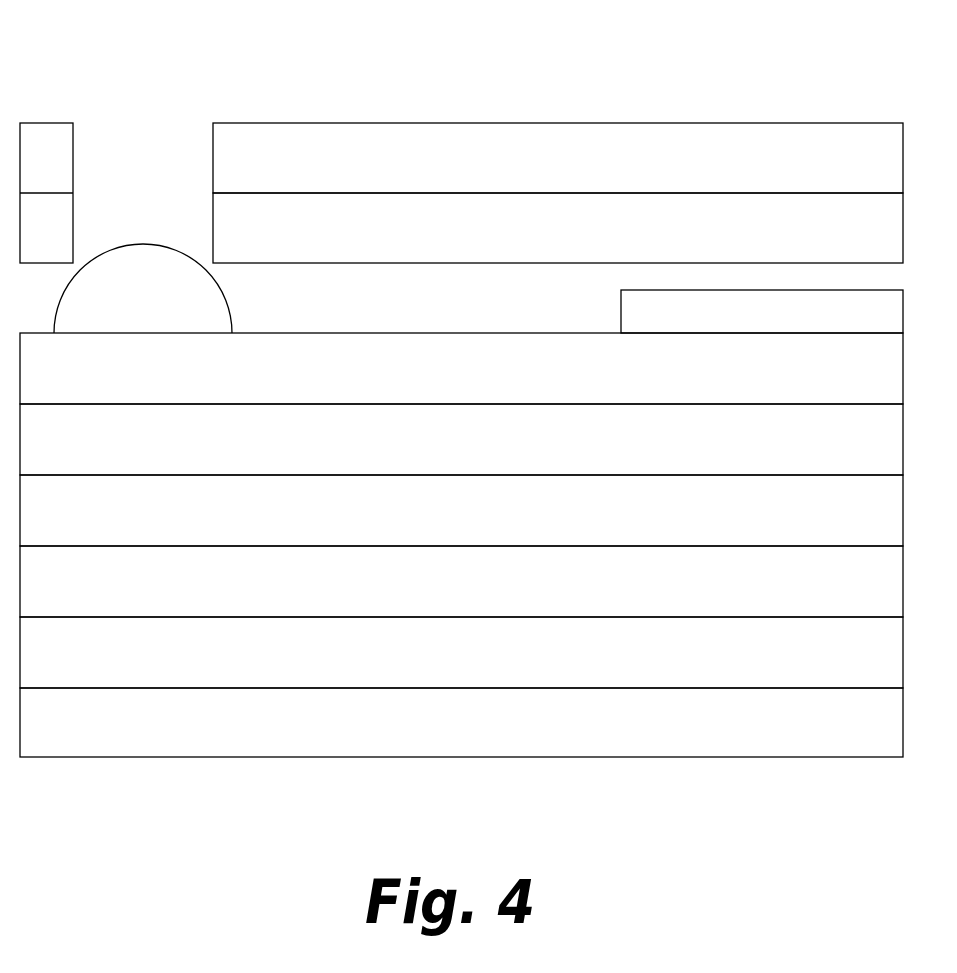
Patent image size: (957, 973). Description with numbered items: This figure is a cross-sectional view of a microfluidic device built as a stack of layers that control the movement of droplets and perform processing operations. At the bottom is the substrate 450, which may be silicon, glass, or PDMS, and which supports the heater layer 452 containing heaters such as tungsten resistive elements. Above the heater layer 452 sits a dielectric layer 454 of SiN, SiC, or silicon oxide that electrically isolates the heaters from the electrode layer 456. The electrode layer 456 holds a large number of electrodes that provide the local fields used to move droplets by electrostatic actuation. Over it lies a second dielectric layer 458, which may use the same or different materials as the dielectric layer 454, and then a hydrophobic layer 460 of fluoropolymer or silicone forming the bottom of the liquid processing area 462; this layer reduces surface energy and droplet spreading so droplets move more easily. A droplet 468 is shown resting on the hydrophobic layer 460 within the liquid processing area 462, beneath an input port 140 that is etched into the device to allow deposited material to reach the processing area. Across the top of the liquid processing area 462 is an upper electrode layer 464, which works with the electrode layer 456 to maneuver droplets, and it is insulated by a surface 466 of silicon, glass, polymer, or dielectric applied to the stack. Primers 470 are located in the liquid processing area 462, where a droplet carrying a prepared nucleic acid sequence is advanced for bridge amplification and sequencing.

The input port 140 is at (143, 210).
The substrate 450 is at (304, 737).
The heater layer 452 is at (304, 665).
The dielectric layer 454 is at (304, 595).
The electrode layer 456 is at (304, 525).
The dielectric layer 458 is at (304, 454).
The hydrophobic layer 460 is at (304, 385).
The liquid processing area 462 is at (303, 315).
The upper electrode layer 464 is at (303, 243).
The surface 466 is at (303, 172).
The droplet 468 is at (167, 287).
The primers 470 is at (743, 327).